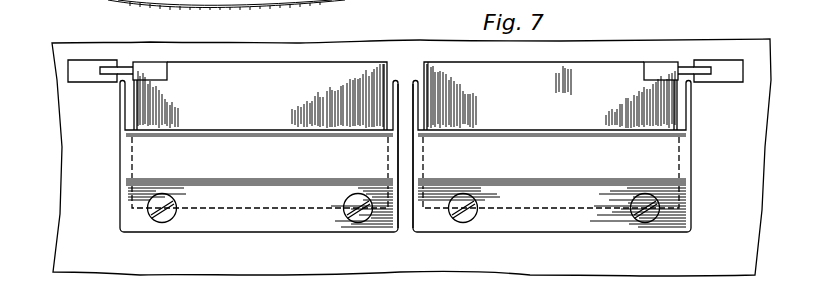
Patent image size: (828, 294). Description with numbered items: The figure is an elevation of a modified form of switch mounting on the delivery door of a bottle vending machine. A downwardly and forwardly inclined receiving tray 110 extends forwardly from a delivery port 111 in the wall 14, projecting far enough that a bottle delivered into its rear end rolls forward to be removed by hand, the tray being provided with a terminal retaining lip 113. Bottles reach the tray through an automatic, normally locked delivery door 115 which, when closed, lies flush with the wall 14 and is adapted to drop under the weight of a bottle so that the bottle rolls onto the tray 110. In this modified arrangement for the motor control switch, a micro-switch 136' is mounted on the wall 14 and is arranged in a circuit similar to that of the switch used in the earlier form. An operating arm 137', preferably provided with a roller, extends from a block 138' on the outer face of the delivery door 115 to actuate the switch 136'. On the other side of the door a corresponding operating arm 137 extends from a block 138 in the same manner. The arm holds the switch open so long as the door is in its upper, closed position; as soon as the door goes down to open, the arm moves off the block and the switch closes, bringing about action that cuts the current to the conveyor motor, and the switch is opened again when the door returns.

The wall 14 is at (729, 48).
The receiving tray 110 is at (264, 227).
The delivery port 111 is at (390, 65).
The terminal retaining lip 113 is at (406, 180).
The delivery door 115 is at (405, 96).
The micro-switch 136' is at (406, 67).
The operating arm 137' is at (142, 45).
The block 138' is at (184, 50).
The operating arm 137 is at (700, 48).
The block 138 is at (673, 42).